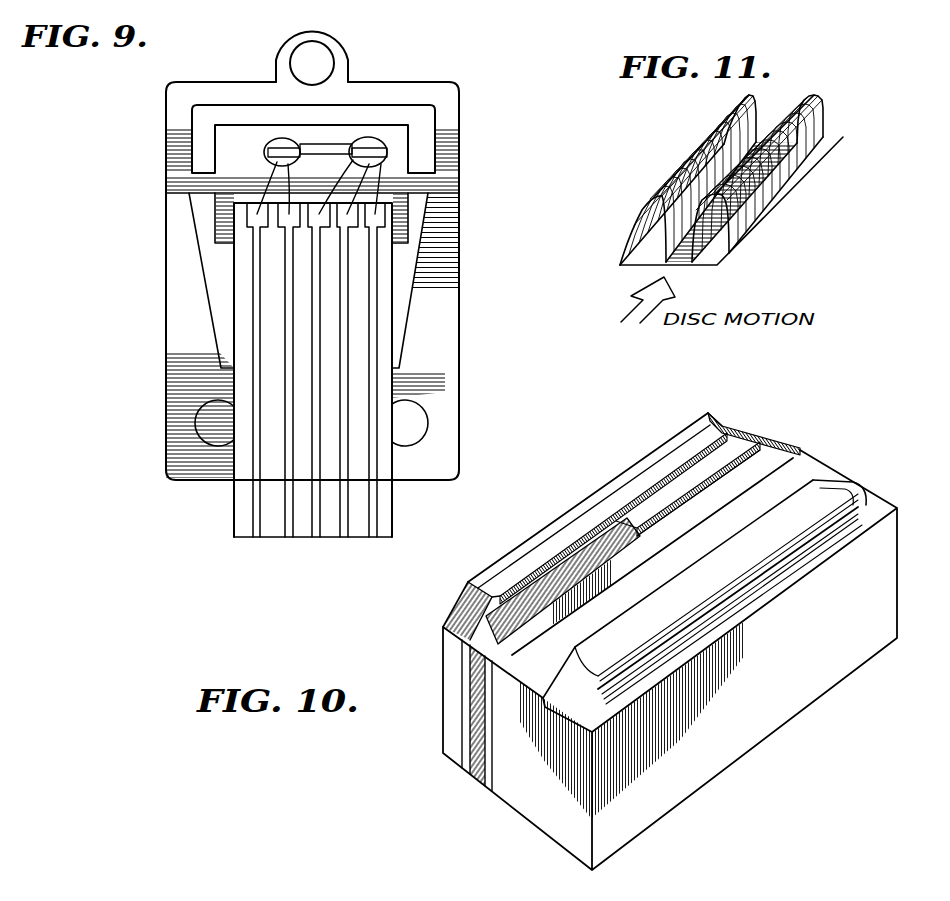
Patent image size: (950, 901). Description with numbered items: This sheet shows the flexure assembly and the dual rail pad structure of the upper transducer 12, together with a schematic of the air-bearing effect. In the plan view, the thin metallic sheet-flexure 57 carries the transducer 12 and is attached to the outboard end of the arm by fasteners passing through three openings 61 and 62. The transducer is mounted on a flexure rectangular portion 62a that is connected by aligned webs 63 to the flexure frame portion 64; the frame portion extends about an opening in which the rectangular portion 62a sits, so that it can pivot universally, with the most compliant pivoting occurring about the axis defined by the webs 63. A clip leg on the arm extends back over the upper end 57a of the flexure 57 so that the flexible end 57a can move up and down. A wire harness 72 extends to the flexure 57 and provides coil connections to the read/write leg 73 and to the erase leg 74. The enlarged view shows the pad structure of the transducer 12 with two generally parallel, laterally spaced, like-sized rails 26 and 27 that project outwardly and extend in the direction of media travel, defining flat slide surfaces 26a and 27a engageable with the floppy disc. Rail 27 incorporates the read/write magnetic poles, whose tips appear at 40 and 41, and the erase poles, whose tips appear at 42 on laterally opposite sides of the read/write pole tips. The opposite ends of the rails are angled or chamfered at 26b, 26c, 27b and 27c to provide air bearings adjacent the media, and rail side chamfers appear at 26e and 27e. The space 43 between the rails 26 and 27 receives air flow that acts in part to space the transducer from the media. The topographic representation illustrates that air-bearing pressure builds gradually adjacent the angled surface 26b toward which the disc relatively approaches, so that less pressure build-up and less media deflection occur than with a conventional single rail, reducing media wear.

In FIG. 9, the flexure 57 is at (158, 462).
In FIG. 9, the upper end of flexure 57a is at (343, 48).
In FIG. 9, the opening 62 is at (310, 44).
In FIG. 9, the flexure rectangular portion 62a is at (245, 133).
In FIG. 9, the webs 63 is at (195, 182).
In FIG. 9, the flexure frame portion 64 is at (180, 272).
In FIG. 9, the opening 61 is at (204, 428).
In FIG. 9, the wire harness 72 is at (233, 512).
In FIG. 9, the read/write leg 73 is at (386, 145).
In FIG. 9, the erase leg 74 is at (264, 152).
In FIG. 10, the transducer 12 is at (737, 763).
In FIG. 10, the rail 26 is at (680, 675).
In FIG. 10, the slide surface 26a is at (680, 598).
In FIG. 10, the angled end 26b is at (585, 712).
In FIG. 10, the angled end 26c is at (860, 493).
In FIG. 10, the rail side chamfer 26e is at (733, 627).
In FIG. 10, the rail 27 is at (671, 442).
In FIG. 10, the slide surface 27a is at (707, 412).
In FIG. 10, the angled end 27b is at (463, 608).
In FIG. 10, the angled end 27c is at (768, 433).
In FIG. 10, the rail side chamfer 27e is at (563, 513).
In FIG. 10, the read/write pole tip 40 is at (543, 578).
In FIG. 10, the read/write pole tip 41 is at (660, 498).
In FIG. 10, the erase pole tips 42 is at (622, 503).
In FIG. 10, the space 43 is at (800, 477).